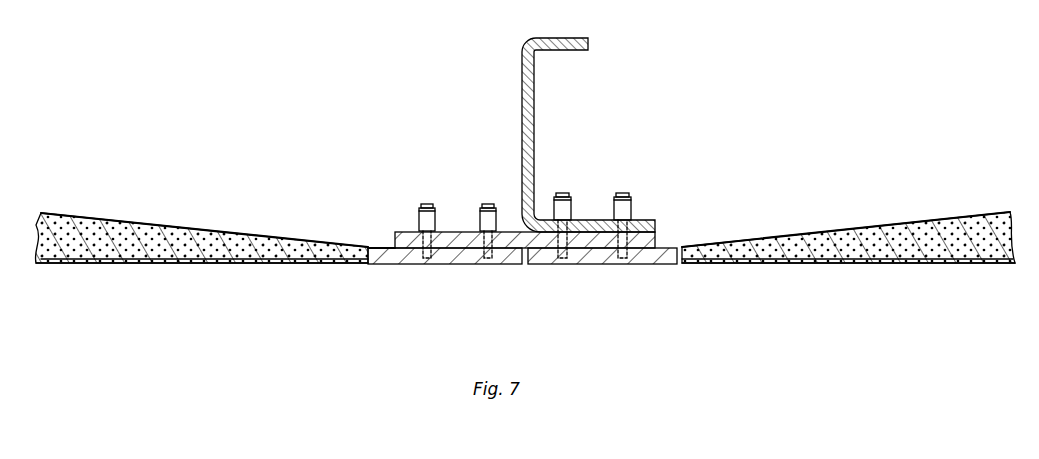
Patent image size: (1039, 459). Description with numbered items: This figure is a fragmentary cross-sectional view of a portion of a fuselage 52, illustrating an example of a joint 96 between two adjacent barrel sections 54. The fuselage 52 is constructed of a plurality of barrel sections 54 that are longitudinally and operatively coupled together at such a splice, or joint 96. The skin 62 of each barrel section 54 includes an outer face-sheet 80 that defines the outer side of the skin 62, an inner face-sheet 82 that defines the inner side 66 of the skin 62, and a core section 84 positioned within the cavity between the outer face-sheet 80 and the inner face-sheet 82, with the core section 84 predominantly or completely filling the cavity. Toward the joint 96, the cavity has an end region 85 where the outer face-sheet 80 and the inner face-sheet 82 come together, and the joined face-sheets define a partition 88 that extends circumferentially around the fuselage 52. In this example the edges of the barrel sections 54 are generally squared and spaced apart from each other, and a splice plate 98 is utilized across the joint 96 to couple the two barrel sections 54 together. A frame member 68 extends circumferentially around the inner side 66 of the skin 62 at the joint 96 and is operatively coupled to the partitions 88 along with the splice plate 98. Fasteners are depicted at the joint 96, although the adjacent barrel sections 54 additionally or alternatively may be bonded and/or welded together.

The fuselage 52 is at (860, 60).
The barrel section 54 is at (232, 165).
The skin 62 is at (885, 272).
The inner side 66 is at (378, 247).
The frame member 68 is at (521, 140).
The outer face-sheet 80 is at (243, 265).
The inner face-sheet 82 is at (255, 232).
The core section 84 is at (175, 232).
The end region 85 is at (378, 258).
The partition 88 is at (405, 258).
The joint 96 is at (518, 280).
The splice plate 98 is at (447, 231).